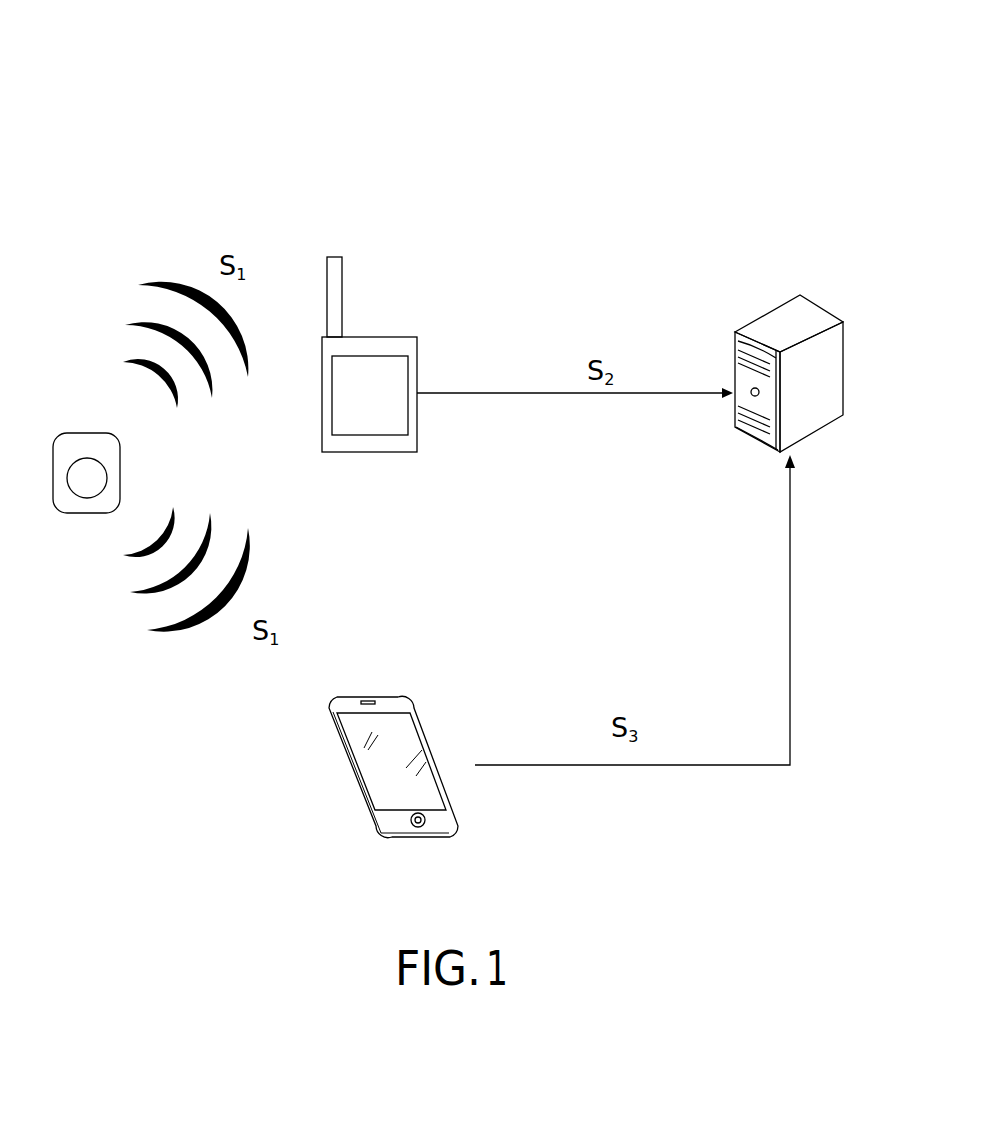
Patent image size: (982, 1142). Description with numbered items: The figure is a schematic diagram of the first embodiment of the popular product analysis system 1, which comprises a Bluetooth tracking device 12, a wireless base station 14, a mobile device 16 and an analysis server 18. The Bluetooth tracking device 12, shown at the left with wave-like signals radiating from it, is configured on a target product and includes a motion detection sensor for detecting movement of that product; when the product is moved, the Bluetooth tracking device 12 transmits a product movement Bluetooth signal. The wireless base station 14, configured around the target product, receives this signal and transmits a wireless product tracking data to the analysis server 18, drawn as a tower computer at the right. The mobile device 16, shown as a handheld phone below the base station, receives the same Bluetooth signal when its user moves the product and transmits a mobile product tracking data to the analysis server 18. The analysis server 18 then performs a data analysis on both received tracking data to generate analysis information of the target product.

The popular product analysis system 1 is at (452, 80).
The Bluetooth tracking device 12 is at (98, 433).
The wireless base station 14 is at (358, 337).
The mobile device 16 is at (368, 683).
The analysis server 18 is at (800, 295).